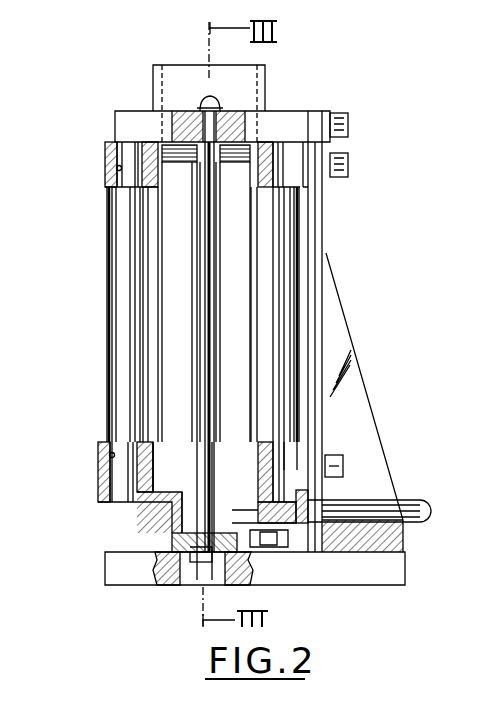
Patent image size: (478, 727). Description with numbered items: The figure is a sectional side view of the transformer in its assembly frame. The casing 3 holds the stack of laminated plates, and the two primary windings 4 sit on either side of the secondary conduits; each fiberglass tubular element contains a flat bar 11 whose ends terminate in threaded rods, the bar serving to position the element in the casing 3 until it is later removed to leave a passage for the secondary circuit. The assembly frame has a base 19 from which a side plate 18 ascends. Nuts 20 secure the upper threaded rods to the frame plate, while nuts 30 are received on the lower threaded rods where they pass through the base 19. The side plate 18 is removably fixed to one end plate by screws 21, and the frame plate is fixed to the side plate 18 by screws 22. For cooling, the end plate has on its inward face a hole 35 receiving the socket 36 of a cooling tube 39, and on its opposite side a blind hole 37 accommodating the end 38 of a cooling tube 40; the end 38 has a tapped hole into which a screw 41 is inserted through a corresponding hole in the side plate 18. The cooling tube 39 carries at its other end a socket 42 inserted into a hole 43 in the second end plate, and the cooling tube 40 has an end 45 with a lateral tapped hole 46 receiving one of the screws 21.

The casing 3 is at (108, 347).
The primary winding 4 is at (222, 262).
The flat bar 11 is at (208, 318).
The side plate 18 is at (320, 413).
The base 19 is at (340, 568).
The nut 20 is at (210, 324).
The screw 21 is at (340, 160).
The screw 22 is at (348, 114).
The nut 30 is at (203, 570).
The hole 35 is at (110, 453).
The socket 36 is at (127, 478).
The blind hole 37 is at (297, 530).
The end 38 is at (287, 453).
The cooling tube 39 is at (127, 242).
The cooling tube 40 is at (300, 303).
The screw 41 is at (343, 463).
The socket 42 is at (204, 100).
The hole 43 is at (118, 170).
The end 45 is at (283, 173).
The lateral tapped hole 46 is at (305, 160).